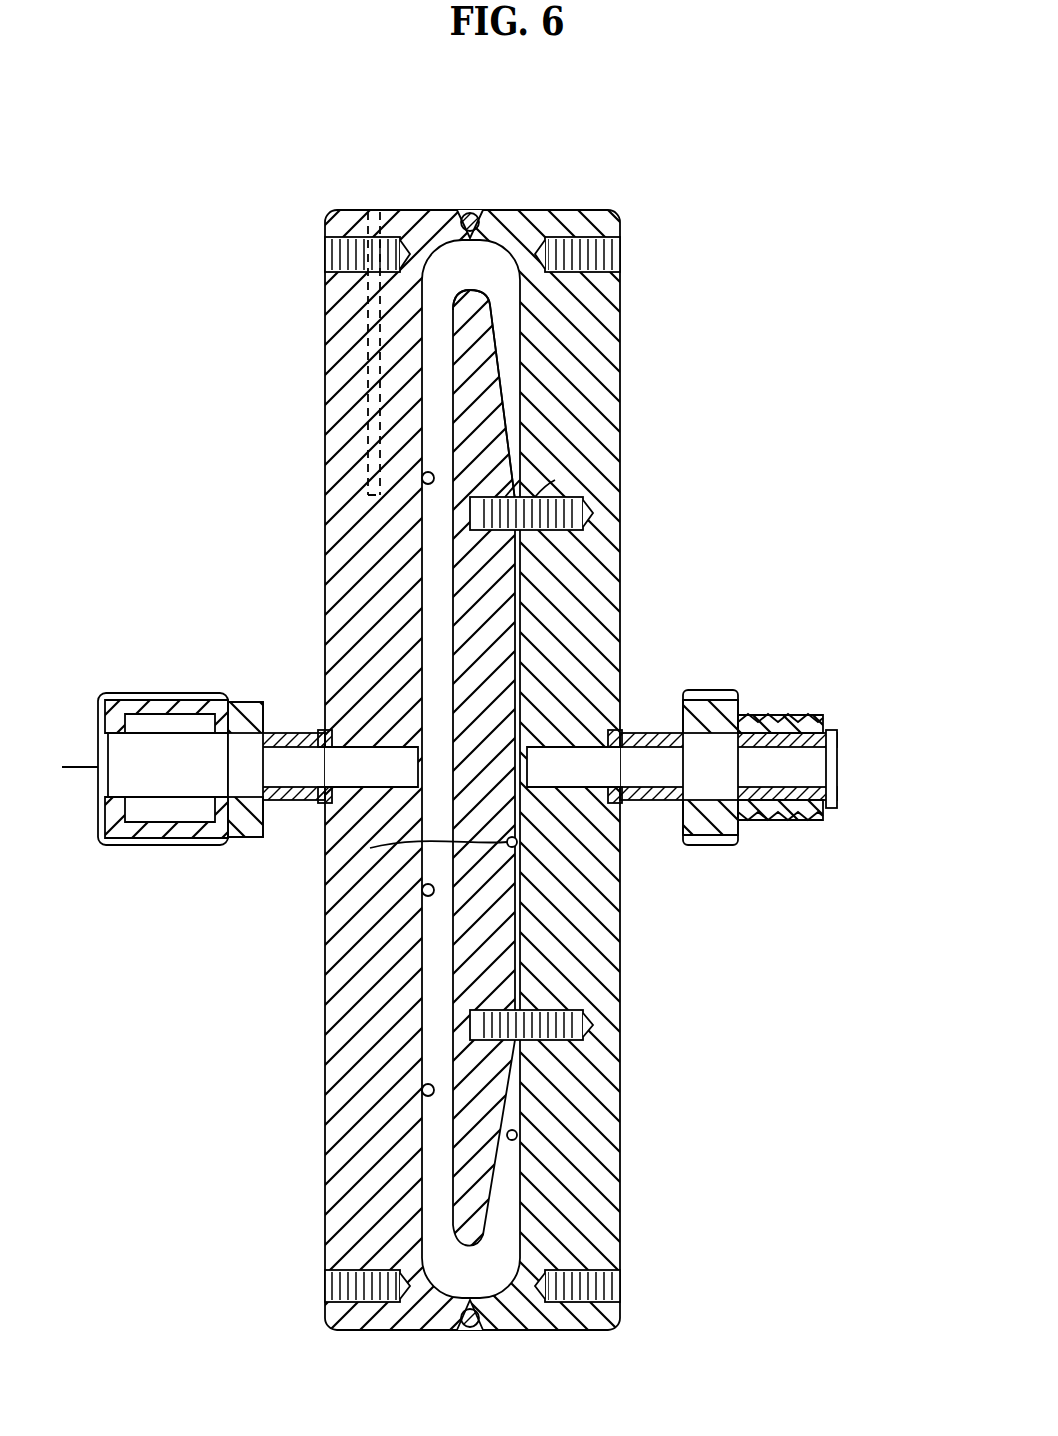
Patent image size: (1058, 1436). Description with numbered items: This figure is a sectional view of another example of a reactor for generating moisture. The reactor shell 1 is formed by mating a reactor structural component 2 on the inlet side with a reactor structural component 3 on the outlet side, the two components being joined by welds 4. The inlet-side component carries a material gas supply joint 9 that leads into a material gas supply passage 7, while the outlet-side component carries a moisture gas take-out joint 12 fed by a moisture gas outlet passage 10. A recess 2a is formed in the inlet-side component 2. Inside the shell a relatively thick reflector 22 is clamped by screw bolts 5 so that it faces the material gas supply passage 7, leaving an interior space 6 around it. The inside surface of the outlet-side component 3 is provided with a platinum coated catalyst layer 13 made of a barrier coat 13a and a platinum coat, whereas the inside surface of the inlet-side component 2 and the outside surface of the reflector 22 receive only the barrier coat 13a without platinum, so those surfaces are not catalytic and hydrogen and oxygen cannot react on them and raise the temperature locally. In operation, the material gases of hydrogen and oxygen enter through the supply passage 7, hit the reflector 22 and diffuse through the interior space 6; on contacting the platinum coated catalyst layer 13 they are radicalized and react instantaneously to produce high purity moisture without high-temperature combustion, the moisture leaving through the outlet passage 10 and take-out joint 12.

The reactor shell 1 is at (646, 152).
The reactor structural component on the inlet side 2 is at (368, 612).
The recess 2a is at (422, 478).
The reactor structural component on the outlet side 3 is at (612, 358).
The welds 4 is at (472, 212).
The screw bolts 5 is at (555, 495).
The interior space 6 is at (505, 335).
The material gas supply passage 7 is at (300, 800).
The material gas supply joint 9 is at (152, 825).
The moisture gas outlet passage 10 is at (645, 792).
The moisture gas take-out joint 12 is at (798, 808).
The platinum coated catalyst layer 13 is at (518, 1138).
The barrier coat 13a is at (450, 803).
The reflector 22 is at (487, 607).